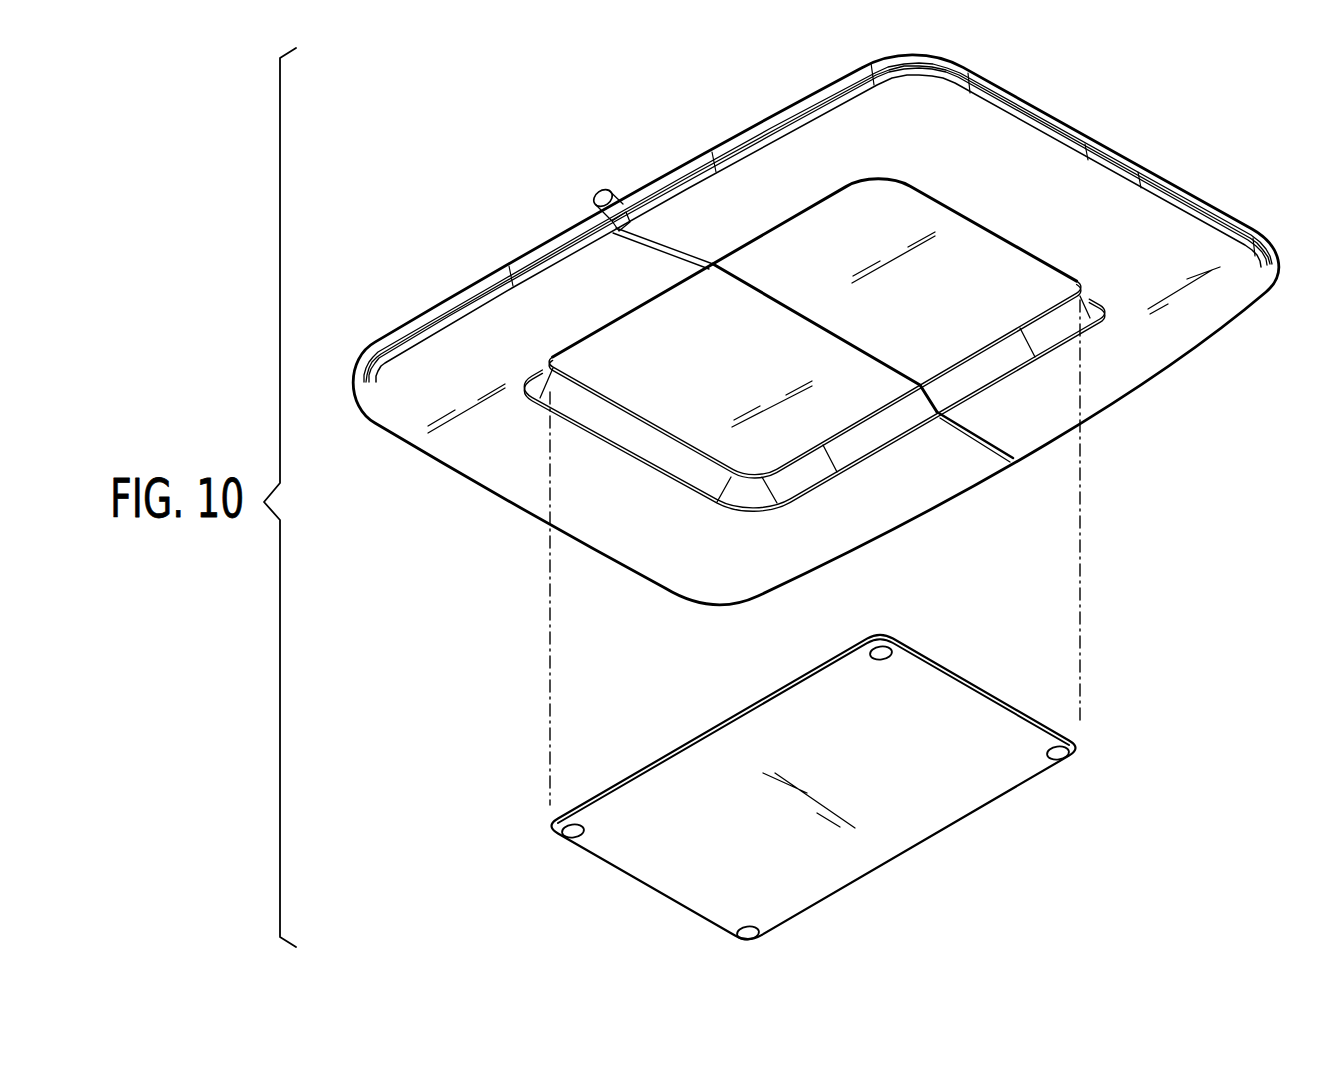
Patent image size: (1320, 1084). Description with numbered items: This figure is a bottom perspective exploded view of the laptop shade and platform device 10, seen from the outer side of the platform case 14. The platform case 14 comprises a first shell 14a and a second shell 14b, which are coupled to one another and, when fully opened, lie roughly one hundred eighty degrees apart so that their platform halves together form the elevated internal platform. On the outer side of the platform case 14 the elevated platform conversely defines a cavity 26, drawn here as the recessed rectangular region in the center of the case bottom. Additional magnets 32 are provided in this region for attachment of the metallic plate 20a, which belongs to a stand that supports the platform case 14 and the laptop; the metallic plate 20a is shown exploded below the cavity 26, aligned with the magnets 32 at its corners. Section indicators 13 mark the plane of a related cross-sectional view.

The laptop shade and platform device 10 is at (822, 498).
The section line 13 is at (849, 369).
The platform case 14 is at (823, 330).
The first shell 14a is at (455, 460).
The second shell 14b is at (1221, 326).
The cavity 26 is at (814, 354).
The metallic plate 20a is at (814, 788).
The magnets 32 is at (815, 793).